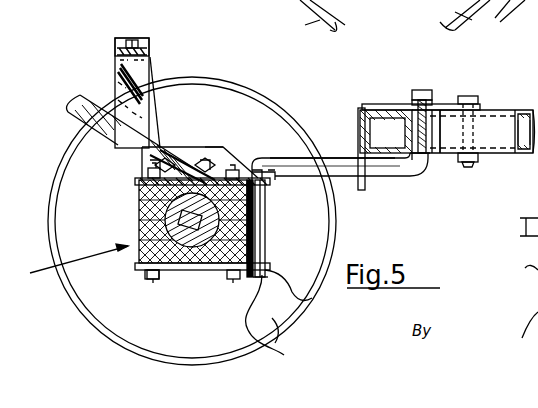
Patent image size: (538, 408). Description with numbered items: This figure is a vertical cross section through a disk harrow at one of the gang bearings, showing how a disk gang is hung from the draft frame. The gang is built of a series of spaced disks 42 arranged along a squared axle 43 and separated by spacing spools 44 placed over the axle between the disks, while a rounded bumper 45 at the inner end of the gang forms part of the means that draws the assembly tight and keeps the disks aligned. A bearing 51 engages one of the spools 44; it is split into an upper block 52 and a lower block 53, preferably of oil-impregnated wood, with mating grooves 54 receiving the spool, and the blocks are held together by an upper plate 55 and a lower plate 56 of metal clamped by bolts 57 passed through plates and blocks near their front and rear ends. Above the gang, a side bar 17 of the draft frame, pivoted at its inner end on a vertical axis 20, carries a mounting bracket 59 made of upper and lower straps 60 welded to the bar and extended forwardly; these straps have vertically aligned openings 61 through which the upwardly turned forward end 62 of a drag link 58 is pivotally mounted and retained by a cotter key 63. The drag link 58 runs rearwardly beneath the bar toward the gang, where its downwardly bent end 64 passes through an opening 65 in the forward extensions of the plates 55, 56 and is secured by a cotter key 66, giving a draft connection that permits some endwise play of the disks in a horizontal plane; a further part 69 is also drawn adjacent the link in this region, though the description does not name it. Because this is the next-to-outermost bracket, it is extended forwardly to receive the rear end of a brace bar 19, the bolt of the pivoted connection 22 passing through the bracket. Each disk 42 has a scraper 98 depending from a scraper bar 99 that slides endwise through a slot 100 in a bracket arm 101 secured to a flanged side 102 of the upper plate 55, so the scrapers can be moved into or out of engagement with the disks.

The side bar 17 is at (396, 160).
The brace bar 19 is at (512, 118).
The pivot axis 20 is at (415, 14).
The pivoted connection 22 is at (470, 96).
The disk 42 is at (272, 318).
The axle 43 is at (262, 226).
The spacing spool 44 is at (254, 216).
The bumper 45 is at (336, 22).
The bearing 51 is at (69, 262).
The upper block 52 is at (138, 190).
The lower block 53 is at (202, 271).
The groove 54 is at (142, 230).
The upper plate 55 is at (194, 148).
The lower plate 56 is at (140, 266).
The clamp bolt 57 is at (150, 280).
The drag link 58 is at (292, 158).
The mounting bracket 59 is at (374, 106).
The strap 60 is at (494, 110).
The opening 61 is at (428, 100).
The upwardly turned end 62 is at (434, 132).
The cotter key 63 is at (418, 90).
The downwardly bent end 64 is at (312, 298).
The opening 65 is at (276, 176).
The cotter key 66 is at (279, 355).
The bar 69 is at (362, 192).
The scraper 98 is at (88, 124).
The scraper bar 99 is at (150, 44).
The slot 100 is at (115, 45).
The bracket arm 101 is at (134, 40).
The flanged side 102 is at (175, 147).